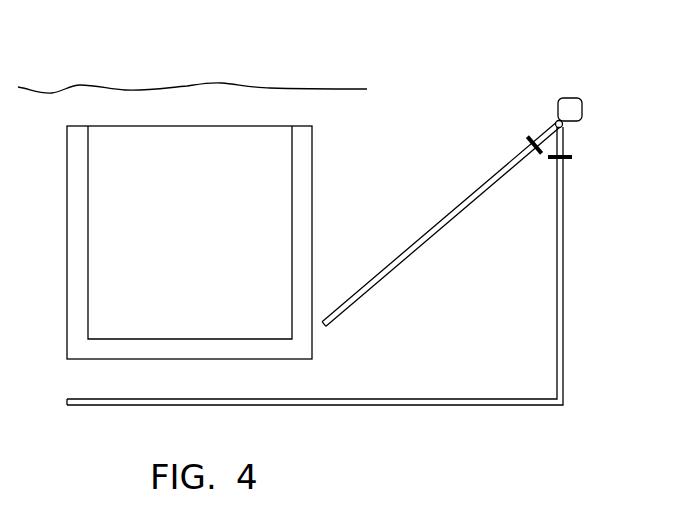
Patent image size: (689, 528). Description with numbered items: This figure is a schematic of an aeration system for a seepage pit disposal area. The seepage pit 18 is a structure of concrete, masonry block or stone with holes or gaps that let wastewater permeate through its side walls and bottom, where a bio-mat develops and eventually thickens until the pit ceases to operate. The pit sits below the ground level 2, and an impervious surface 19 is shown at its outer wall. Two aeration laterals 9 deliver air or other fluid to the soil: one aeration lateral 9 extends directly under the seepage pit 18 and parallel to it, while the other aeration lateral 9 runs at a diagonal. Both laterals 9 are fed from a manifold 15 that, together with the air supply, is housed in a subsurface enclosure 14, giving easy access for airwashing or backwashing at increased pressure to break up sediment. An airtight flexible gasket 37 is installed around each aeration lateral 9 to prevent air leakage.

The ground level 2 is at (323, 88).
The aeration lateral 9 is at (348, 310).
The subsurface enclosure 14 is at (570, 98).
The manifold 15 is at (556, 121).
The seepage pit 18 is at (291, 240).
The impervious surface 19 is at (311, 190).
The flexible gasket 37 is at (527, 137).